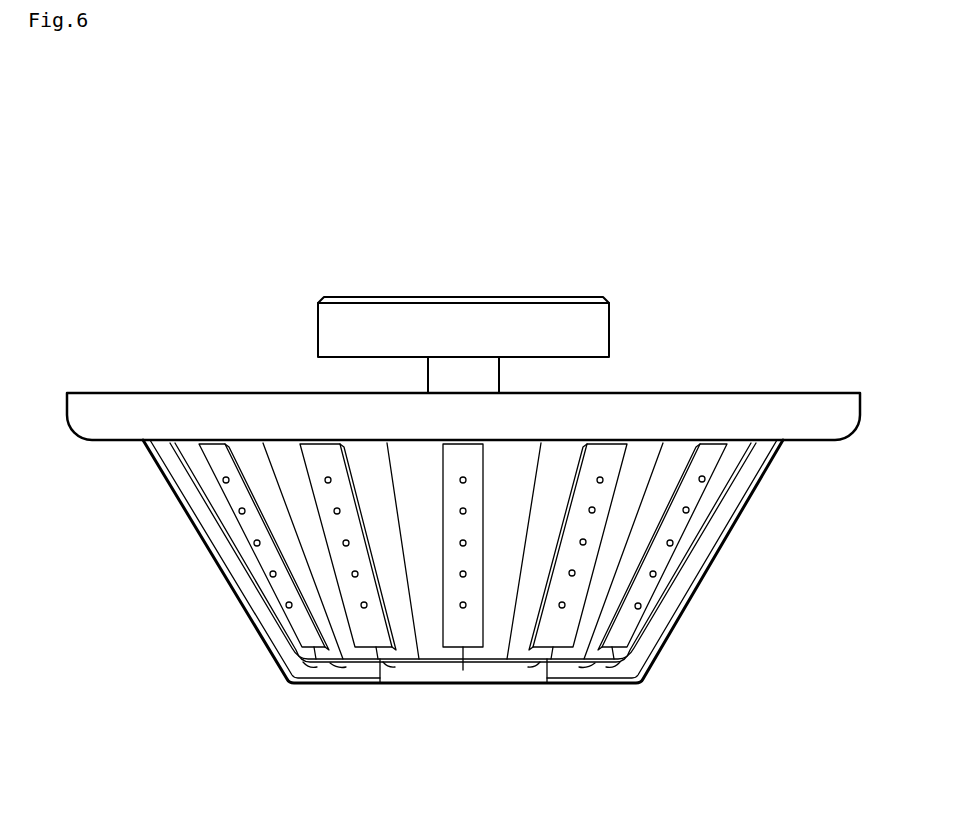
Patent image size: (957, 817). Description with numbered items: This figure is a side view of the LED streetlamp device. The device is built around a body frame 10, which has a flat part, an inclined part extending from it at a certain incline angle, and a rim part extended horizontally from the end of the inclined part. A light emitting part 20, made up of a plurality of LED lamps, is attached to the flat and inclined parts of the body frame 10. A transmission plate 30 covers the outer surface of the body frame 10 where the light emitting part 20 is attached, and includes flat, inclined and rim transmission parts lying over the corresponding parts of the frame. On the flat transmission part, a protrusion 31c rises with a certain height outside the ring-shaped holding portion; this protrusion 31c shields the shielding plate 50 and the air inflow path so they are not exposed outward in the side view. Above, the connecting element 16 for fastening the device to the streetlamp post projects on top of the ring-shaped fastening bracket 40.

The connecting element 16 is at (475, 310).
The ring-shaped fastening bracket 40 is at (108, 427).
The transmission plate 30 is at (727, 545).
The protrusion 31c is at (343, 683).
The shielding plate 50 is at (452, 683).
The light emitting part 20 is at (613, 460).
The body frame 10 is at (511, 557).